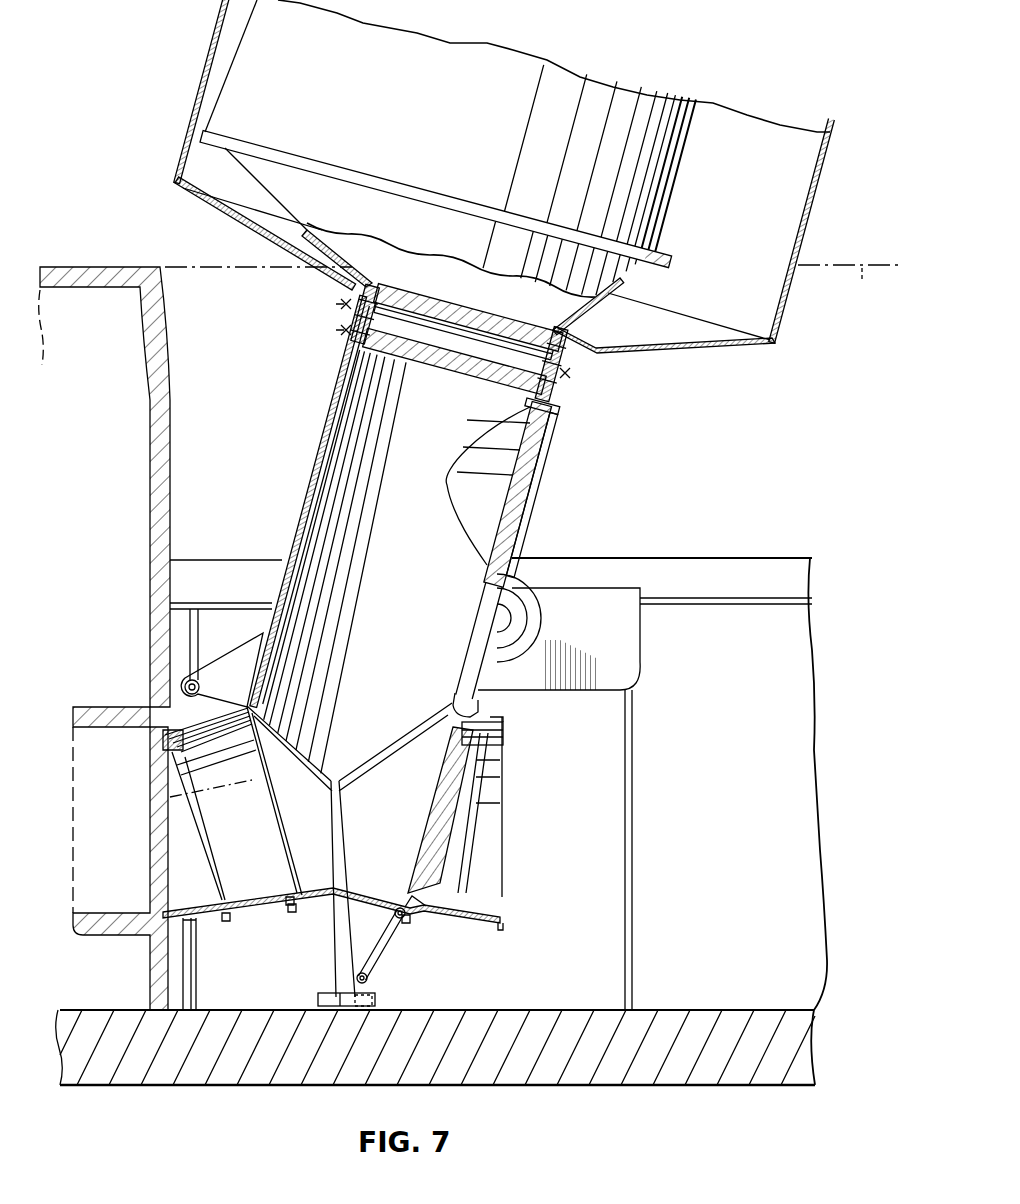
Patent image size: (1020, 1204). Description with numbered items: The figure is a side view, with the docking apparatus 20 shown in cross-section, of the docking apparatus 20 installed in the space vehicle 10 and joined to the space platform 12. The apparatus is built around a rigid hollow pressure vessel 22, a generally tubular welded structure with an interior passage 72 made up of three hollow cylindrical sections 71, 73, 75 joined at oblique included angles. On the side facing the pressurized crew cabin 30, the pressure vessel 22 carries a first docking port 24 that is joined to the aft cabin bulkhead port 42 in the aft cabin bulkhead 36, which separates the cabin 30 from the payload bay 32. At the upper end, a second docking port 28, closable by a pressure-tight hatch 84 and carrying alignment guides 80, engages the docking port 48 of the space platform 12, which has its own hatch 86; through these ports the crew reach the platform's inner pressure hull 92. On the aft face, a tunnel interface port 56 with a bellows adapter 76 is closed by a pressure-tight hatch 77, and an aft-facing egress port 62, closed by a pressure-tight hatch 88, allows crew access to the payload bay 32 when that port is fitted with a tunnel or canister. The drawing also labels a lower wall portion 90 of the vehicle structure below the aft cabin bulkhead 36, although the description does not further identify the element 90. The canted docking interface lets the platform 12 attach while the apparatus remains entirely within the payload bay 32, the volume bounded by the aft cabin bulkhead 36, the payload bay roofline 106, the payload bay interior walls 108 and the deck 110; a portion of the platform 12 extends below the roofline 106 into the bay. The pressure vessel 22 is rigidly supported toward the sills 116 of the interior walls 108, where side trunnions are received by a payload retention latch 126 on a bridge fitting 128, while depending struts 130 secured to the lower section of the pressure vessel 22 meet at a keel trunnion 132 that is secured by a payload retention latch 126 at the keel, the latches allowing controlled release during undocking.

The space vehicle 10 is at (652, 1097).
The space platform 12 is at (206, 72).
The docking apparatus 20 is at (630, 467).
The pressure vessel 22 is at (347, 646).
The first docking port 24 is at (230, 920).
The second docking port 28 is at (352, 312).
The crew cabin 30 is at (104, 638).
The payload bay 32 is at (803, 698).
The aft cabin bulkhead 36 is at (150, 492).
The aft cabin bulkhead port 42 is at (165, 735).
The docking port 48 is at (387, 296).
The tunnel interface port 56 is at (475, 741).
The egress port 62 is at (545, 443).
The hollow cylindrical section 71 is at (288, 905).
The interior passage 72 is at (392, 621).
The hollow cylindrical section 73 is at (398, 899).
The hollow cylindrical section 75 is at (297, 512).
The bellows adapter 76 is at (505, 873).
The pressure-tight hatch 77 is at (452, 822).
The alignment guides 80 is at (558, 367).
The pressure-tight hatch 84 is at (485, 362).
The hatch 86 is at (497, 315).
The pressure-tight hatch 88 is at (515, 503).
The lower wall 90 is at (150, 820).
The inner pressure hull 92 is at (680, 178).
The payload bay roofline 106 is at (862, 283).
The payload bay interior walls 108 is at (744, 773).
The deck 110 is at (690, 1008).
The sills 116 is at (745, 597).
The payload retention latch 126 is at (318, 993).
The bridge fitting 128 is at (640, 637).
The depending struts 130 is at (375, 950).
The keel trunnion 132 is at (372, 996).